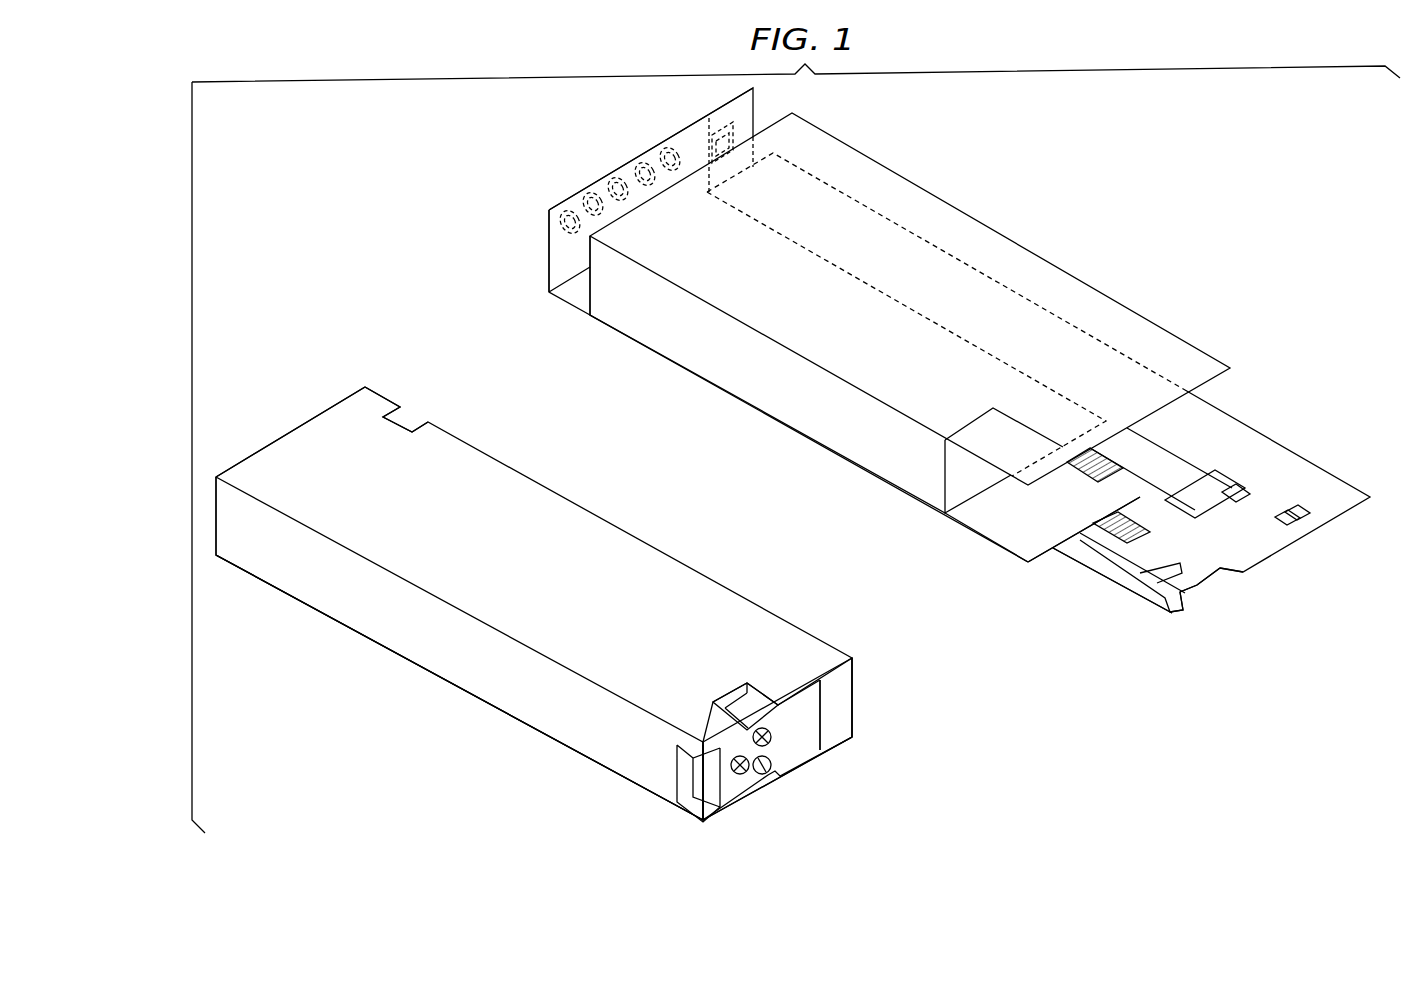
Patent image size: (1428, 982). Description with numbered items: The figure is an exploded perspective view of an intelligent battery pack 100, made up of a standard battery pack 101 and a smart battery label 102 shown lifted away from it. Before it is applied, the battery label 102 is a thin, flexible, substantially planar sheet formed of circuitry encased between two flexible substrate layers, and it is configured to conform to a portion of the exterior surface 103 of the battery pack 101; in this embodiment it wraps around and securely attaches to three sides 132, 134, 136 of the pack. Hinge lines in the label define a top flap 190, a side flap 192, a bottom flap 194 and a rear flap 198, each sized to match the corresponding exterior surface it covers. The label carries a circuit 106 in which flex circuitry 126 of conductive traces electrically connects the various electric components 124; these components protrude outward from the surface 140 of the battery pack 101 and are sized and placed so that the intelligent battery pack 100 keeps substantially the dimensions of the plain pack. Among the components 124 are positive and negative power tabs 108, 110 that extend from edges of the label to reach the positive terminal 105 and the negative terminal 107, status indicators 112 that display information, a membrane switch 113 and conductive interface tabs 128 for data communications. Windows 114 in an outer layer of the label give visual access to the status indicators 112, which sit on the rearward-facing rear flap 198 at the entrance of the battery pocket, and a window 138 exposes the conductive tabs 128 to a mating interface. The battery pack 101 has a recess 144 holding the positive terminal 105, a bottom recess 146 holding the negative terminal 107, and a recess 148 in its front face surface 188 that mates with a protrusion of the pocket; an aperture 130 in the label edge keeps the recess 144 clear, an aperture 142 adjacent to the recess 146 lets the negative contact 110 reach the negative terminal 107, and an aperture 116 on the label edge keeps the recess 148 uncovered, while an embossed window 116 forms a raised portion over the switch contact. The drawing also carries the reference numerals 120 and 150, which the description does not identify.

The intelligent battery pack 100 is at (332, 195).
The standard battery pack 101 is at (322, 345).
The smart battery label 102 is at (1093, 270).
The exterior surface 103 is at (500, 520).
The positive terminal 105 is at (790, 712).
The circuit 106 is at (1240, 452).
The negative terminal 107 is at (772, 782).
The positive power tab 108 is at (1080, 480).
The negative power tab 110 is at (1100, 552).
The status indicators 112 is at (680, 145).
The membrane switch 113 is at (735, 118).
The windows 114 is at (566, 215).
The aperture 116 is at (708, 120).
The front panel 120 is at (545, 240).
The electric components 124 is at (1245, 490).
The flex circuitry 126 is at (938, 336).
The conductive interface tabs 128 is at (1298, 522).
The aperture 130 is at (1200, 585).
The side 132 is at (290, 445).
The side 134 is at (462, 668).
The side 136 is at (609, 758).
The window 138 is at (1297, 508).
The surface 140 is at (1248, 558).
The aperture 142 is at (1120, 563).
The recess 144 is at (728, 692).
The bottom recess 146 is at (756, 800).
The recess 148 is at (676, 790).
The notch 150 is at (400, 415).
The front face surface 188 is at (805, 743).
The top flap 190 is at (945, 223).
The side flap 192 is at (672, 355).
The bottom flap 194 is at (1215, 430).
The rear flap 198 is at (660, 122).